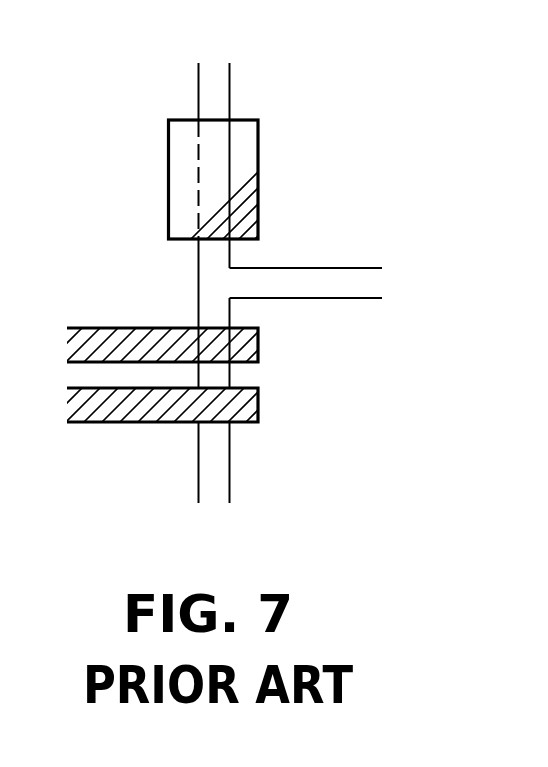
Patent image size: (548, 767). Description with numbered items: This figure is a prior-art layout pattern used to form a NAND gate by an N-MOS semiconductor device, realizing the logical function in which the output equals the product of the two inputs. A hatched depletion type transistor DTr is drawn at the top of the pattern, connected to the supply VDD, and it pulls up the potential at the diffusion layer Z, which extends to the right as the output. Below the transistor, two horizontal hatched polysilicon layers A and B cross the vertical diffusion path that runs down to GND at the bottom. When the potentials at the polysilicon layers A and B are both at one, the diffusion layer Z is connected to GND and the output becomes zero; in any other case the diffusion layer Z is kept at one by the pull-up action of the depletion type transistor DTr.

The depletion type transistor DTr is at (258, 192).
The diffusion layer Z is at (367, 286).
The polysilicon layer A is at (68, 345).
The polysilicon layer B is at (68, 405).
The VDD supply VDD is at (221, 72).
The element GND is at (215, 486).